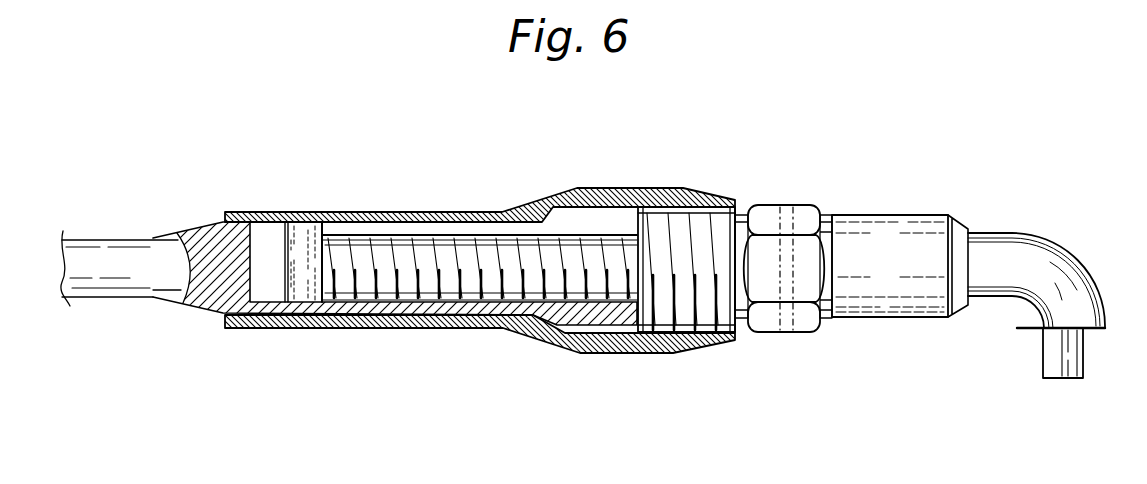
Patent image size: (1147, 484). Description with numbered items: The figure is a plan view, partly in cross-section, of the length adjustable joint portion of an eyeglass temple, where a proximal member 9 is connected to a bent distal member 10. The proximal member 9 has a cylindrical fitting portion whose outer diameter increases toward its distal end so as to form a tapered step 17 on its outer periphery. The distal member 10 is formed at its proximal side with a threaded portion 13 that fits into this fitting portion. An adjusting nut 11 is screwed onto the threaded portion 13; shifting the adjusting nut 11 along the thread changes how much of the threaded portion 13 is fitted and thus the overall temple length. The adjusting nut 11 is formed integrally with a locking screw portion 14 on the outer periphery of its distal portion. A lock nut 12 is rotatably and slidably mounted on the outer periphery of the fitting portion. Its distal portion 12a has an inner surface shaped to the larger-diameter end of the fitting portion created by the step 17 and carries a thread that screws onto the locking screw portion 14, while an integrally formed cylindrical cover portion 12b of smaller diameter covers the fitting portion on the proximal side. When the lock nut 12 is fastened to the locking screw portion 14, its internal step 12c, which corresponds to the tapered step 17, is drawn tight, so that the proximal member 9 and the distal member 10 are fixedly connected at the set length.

The proximal member 9 is at (117, 238).
The distal member 10 is at (1046, 260).
The adjusting nut 11 is at (777, 216).
The lock nut 12 is at (480, 285).
The distal portion of lock nut 12a is at (642, 186).
The cylindrical cover portion 12b is at (305, 330).
The step of lock nut 12c is at (550, 346).
The threaded portion 13 is at (440, 331).
The locking screw portion 14 is at (710, 349).
The step 17 is at (543, 199).